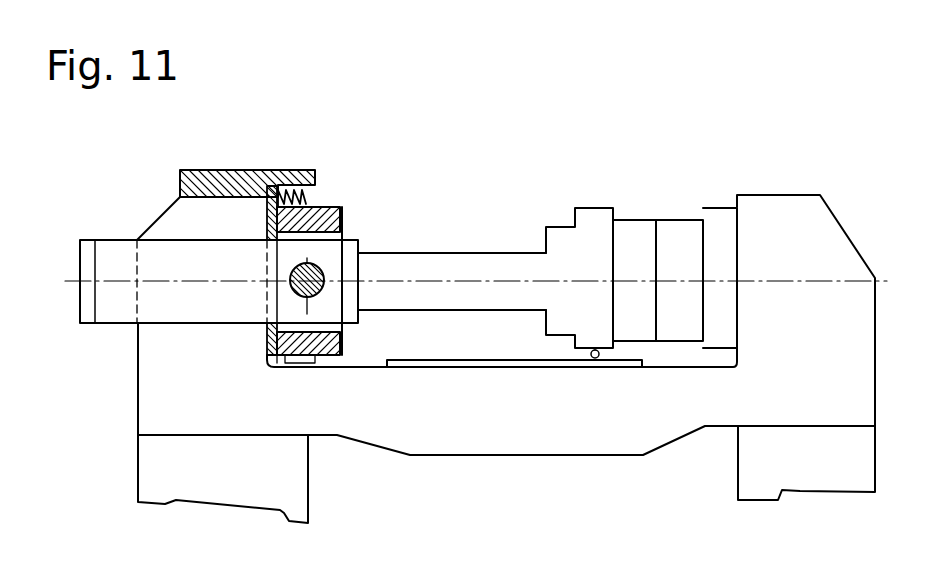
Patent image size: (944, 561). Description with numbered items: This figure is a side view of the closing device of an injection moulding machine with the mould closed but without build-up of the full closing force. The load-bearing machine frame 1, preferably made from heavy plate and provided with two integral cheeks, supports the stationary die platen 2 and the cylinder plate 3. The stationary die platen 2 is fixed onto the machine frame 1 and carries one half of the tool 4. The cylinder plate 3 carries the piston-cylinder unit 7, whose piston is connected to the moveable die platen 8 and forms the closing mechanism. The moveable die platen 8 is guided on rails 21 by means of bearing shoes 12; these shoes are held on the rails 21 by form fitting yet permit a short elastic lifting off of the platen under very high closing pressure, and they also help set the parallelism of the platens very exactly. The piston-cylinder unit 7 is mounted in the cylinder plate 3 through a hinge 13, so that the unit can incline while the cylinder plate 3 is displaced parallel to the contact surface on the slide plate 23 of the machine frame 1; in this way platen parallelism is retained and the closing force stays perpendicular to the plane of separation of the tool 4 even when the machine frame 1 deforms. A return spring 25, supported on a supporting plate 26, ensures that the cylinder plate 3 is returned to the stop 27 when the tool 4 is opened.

The machine frame 1 is at (180, 393).
The stationary die platen 2 is at (726, 237).
The cylinder plate 3 is at (342, 215).
The tool 4 is at (688, 248).
The piston-cylinder unit 7 is at (117, 260).
The moveable die platen 8 is at (595, 232).
The bearing shoe 12 is at (596, 358).
The hinge 13 is at (320, 297).
The rails 21 is at (497, 367).
The slide plate 23 is at (267, 220).
The return spring 25 is at (307, 196).
The supporting plate 26 is at (205, 187).
The stop 27 is at (300, 362).